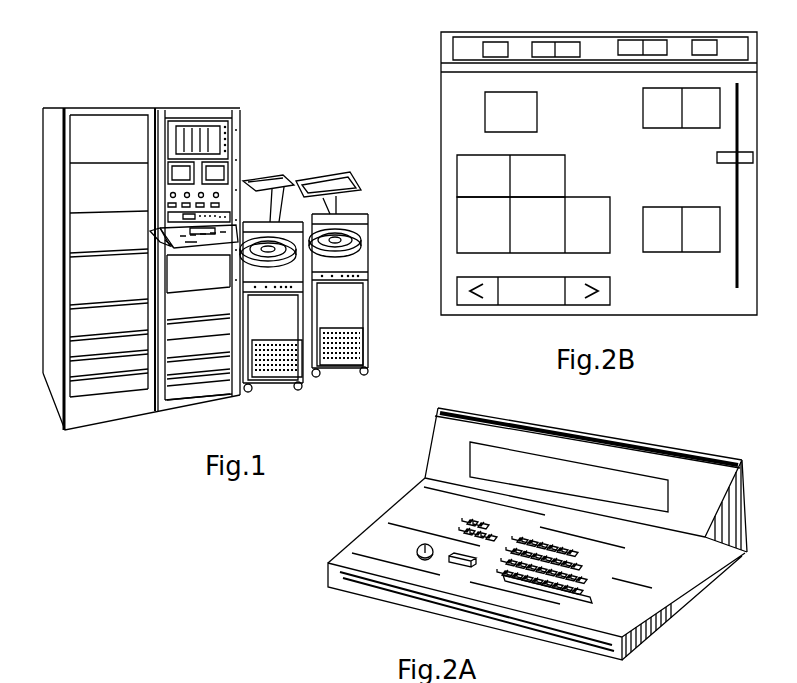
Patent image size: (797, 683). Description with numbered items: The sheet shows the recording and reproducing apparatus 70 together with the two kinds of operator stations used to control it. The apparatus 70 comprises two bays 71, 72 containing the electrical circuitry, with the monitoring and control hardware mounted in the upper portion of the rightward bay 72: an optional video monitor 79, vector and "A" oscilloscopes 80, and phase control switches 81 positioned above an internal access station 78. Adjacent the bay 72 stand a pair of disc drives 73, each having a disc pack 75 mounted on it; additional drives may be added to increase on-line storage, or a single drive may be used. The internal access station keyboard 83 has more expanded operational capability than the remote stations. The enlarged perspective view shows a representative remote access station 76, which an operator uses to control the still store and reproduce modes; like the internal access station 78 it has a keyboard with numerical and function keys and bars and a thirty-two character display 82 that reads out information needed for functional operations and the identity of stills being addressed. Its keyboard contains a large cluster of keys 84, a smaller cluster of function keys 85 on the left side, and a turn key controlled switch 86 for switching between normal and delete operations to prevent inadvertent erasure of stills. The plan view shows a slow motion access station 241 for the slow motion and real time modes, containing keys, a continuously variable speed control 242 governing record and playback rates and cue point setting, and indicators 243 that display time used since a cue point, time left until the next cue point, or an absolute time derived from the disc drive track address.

In FIG. 1, the recording and reproducing apparatus 70 is at (170, 416).
In FIG. 1, the bay 71 is at (106, 108).
In FIG. 1, the bay 72 is at (186, 110).
In FIG. 1, the disc drives 73 is at (278, 382).
In FIG. 1, the disc pack 75 is at (304, 226).
In FIG. 2A, the remote access station 76 is at (648, 441).
In FIG. 1, the internal access station 78 is at (184, 248).
In FIG. 1, the video monitor 79 is at (236, 115).
In FIG. 1, the vector and "A" oscilloscopes 80 is at (178, 170).
In FIG. 1, the phase control switches 81 is at (200, 193).
In FIG. 1, the 32 character display 82 is at (197, 234).
In FIG. 2A, the 32 character display 82 is at (502, 448).
In FIG. 1, the internal access station keyboard 83 is at (165, 233).
In FIG. 2A, the large cluster of keys 84 is at (683, 553).
In FIG. 2A, the smaller cluster of function keys 85 is at (379, 547).
In FIG. 2A, the turn key controlled switch 86 is at (423, 561).
In FIG. 2B, the slow motion access station 241 is at (437, 107).
In FIG. 2B, the continuously variable speed control 242 is at (717, 157).
In FIG. 2B, the indicators 243 is at (746, 30).